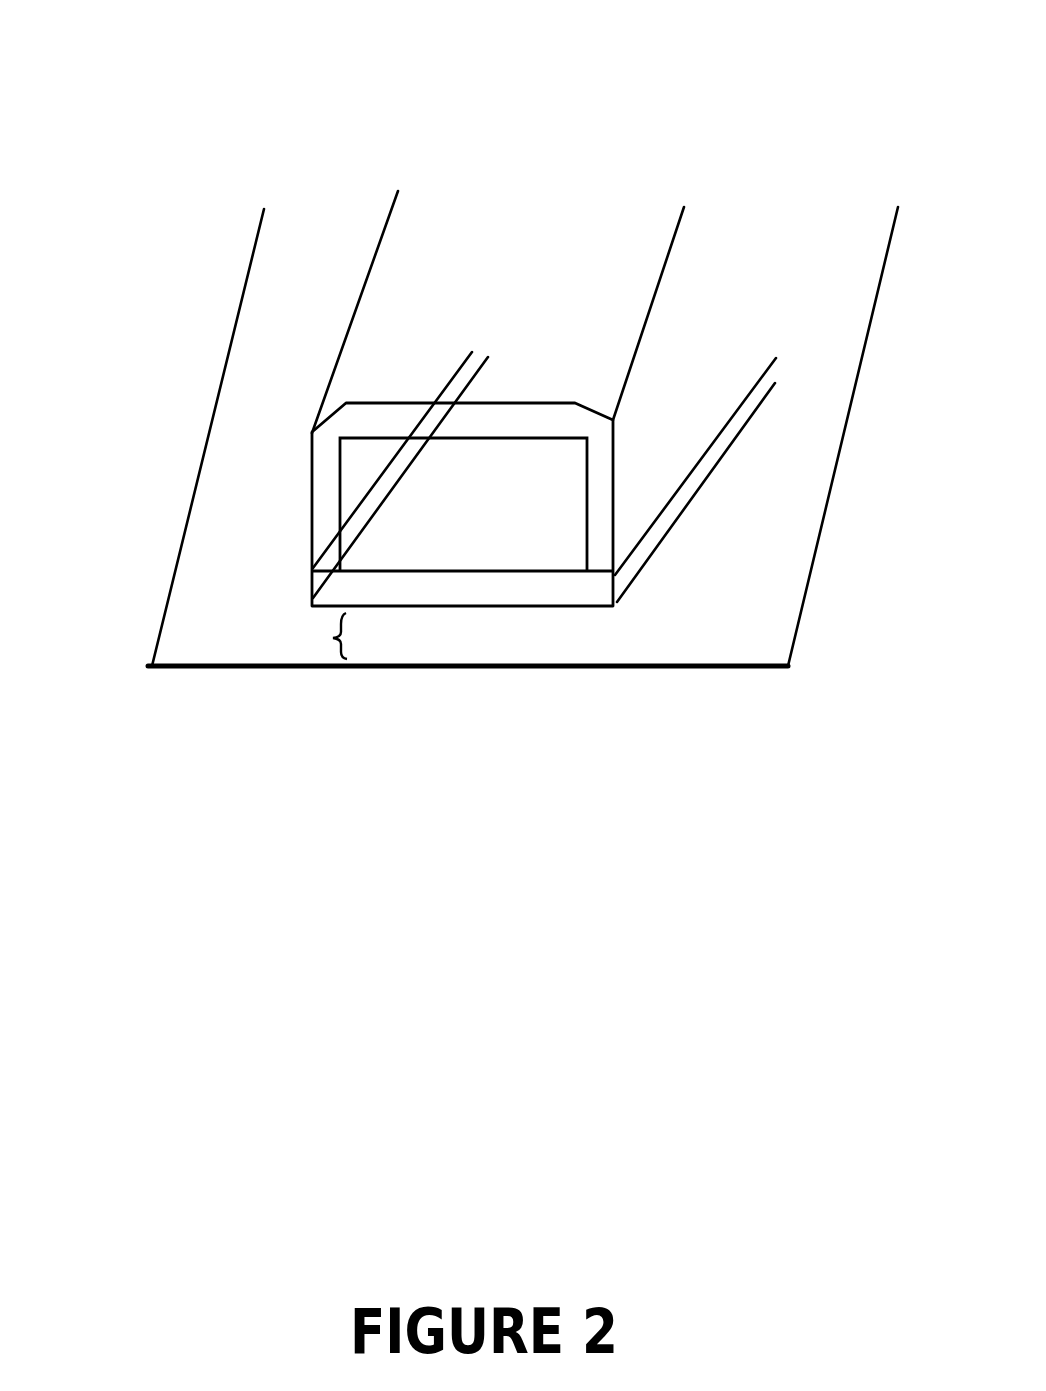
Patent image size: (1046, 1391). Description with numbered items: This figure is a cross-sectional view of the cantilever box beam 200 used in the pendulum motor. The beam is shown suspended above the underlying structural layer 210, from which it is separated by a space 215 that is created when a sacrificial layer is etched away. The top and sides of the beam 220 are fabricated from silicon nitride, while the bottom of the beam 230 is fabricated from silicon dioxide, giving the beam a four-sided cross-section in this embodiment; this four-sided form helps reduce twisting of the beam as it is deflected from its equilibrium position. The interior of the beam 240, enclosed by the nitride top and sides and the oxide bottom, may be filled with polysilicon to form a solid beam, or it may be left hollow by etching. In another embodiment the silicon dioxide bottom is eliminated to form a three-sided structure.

The cantilever box beam 200 is at (98, 25).
The structural layer 210 is at (722, 663).
The space 215 is at (316, 636).
The top and sides of the beam 220 is at (610, 477).
The bottom of the beam 230 is at (543, 597).
The interior of the beam 240 is at (482, 527).